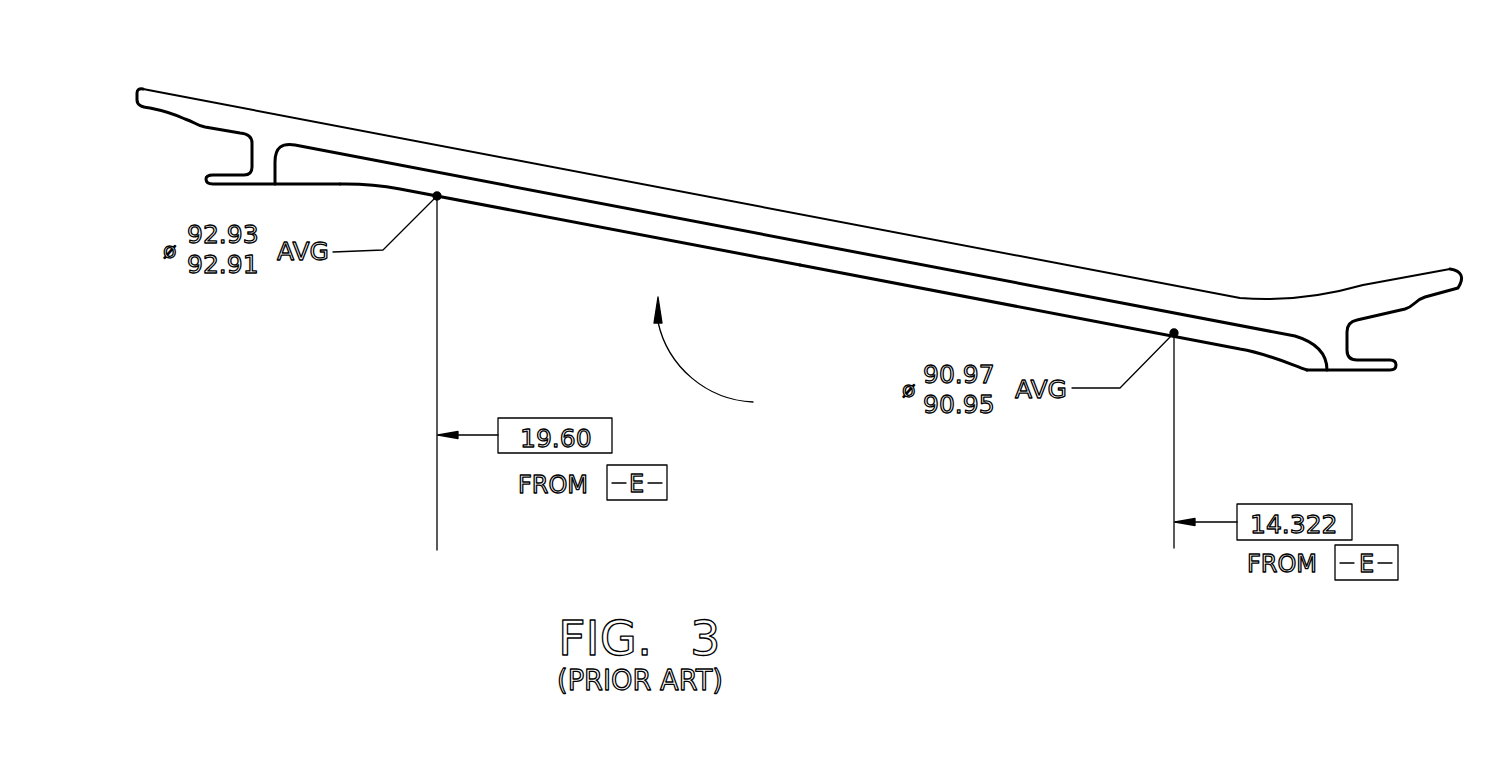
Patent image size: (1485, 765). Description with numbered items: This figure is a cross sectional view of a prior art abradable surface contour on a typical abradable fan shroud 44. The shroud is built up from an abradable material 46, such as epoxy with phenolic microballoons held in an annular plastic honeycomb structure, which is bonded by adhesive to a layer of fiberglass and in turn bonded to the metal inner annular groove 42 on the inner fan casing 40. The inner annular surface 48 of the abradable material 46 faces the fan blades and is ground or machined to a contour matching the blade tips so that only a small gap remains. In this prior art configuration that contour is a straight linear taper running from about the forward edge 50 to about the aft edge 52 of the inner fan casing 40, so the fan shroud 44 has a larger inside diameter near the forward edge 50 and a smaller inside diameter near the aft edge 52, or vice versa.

The inner fan casing 40 is at (287, 116).
The inner annular groove 42 is at (680, 218).
The abradable fan shroud 44 is at (723, 356).
The abradable material 46 is at (720, 236).
The inner annular surface 48 is at (817, 268).
The forward edge 50 is at (245, 185).
The aft edge 52 is at (1347, 371).